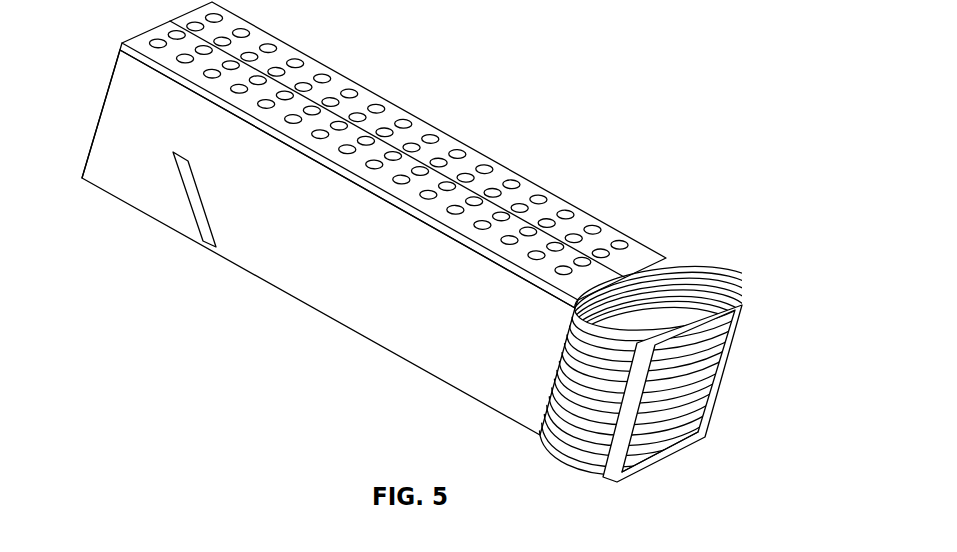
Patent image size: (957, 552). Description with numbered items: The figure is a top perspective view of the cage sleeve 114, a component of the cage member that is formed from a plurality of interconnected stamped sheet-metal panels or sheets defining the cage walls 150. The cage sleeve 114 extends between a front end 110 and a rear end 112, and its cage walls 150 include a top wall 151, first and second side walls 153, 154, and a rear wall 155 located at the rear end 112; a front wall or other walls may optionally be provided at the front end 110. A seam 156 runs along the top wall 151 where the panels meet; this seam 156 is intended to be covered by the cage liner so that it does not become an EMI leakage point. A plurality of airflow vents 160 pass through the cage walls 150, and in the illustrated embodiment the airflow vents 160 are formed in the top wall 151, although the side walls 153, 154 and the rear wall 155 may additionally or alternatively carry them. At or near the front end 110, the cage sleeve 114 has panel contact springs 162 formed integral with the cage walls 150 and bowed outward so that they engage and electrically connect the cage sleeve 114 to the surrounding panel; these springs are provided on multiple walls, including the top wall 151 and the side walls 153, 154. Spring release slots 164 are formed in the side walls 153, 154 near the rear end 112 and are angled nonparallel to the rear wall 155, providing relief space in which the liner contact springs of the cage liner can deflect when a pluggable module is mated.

The front end 110 is at (681, 447).
The rear end 112 is at (122, 42).
The cage sleeve 114 is at (415, 258).
The cage walls 150 is at (344, 228).
The top wall 151 is at (515, 202).
The first side wall 153 is at (730, 356).
The second side wall 154 is at (502, 377).
The rear wall 155 is at (97, 125).
The seam 156 is at (448, 176).
The airflow vents 160 is at (363, 111).
The panel contact springs 162 is at (700, 271).
The spring release slots 164 is at (187, 222).